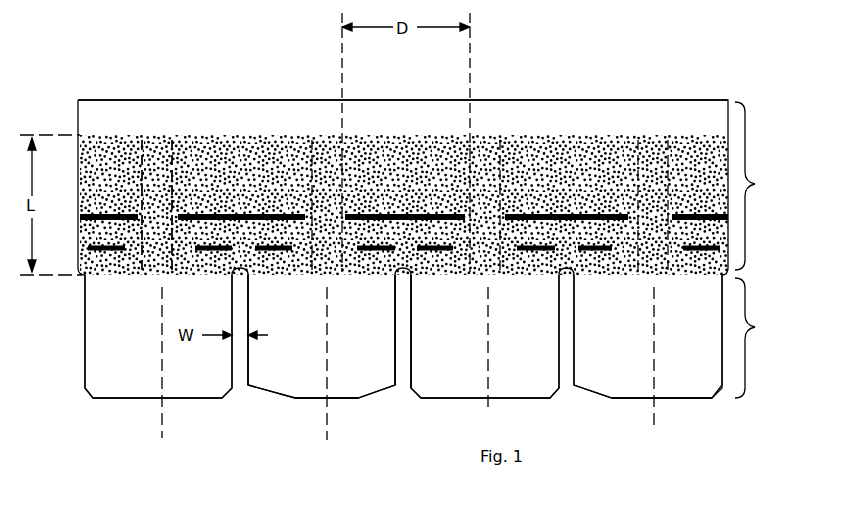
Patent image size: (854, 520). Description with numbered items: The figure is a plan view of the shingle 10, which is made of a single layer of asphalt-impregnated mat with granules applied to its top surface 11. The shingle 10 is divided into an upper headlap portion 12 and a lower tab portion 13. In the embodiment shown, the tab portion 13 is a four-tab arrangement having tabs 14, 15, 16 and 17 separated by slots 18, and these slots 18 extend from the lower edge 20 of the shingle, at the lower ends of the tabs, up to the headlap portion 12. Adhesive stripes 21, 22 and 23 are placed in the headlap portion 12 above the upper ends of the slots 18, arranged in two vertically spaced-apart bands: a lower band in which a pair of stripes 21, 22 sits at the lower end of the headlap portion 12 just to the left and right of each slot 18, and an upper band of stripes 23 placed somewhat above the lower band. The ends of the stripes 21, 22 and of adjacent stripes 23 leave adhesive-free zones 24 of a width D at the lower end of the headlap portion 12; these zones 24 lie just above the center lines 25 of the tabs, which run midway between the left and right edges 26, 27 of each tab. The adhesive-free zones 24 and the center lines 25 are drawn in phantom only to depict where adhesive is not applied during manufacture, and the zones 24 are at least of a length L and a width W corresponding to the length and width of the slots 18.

The shingle 10 is at (566, 97).
The top surface 11 is at (690, 110).
The headlap portion 12 is at (433, 188).
The tab portion 13 is at (756, 338).
The tab 14 is at (692, 392).
The tab 15 is at (450, 395).
The tab 16 is at (310, 396).
The tab 17 is at (152, 393).
The slots 18 is at (243, 387).
The lower edge 20 is at (345, 400).
The adhesive stripe 21 is at (93, 272).
The adhesive stripe 22 is at (218, 278).
The adhesive stripes 23 is at (250, 213).
The adhesive-free zones 24 is at (483, 165).
The center lines 25 is at (165, 420).
The left edge 26 is at (249, 362).
The right edge 27 is at (395, 358).